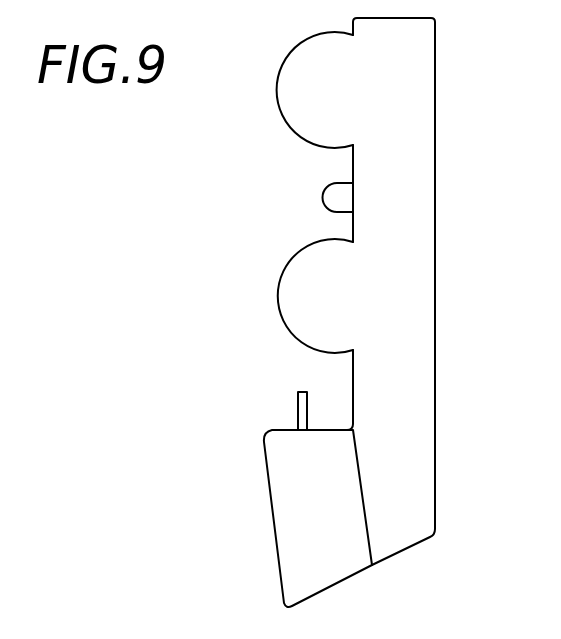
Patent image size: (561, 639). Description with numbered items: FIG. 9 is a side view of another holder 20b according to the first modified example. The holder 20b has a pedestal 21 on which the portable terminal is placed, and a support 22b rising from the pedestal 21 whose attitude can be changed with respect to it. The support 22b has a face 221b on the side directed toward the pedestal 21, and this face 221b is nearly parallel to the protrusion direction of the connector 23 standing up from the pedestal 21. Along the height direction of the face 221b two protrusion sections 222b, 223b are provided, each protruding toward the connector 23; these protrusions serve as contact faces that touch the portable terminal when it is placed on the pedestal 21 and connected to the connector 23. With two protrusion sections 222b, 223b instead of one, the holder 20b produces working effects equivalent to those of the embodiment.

The holder 20b is at (460, 138).
The pedestal 21 is at (283, 537).
The support 22b is at (420, 408).
The connector 23 is at (298, 412).
The face 221b is at (353, 212).
The protrusion section 222b is at (326, 89).
The protrusion section 223b is at (327, 296).